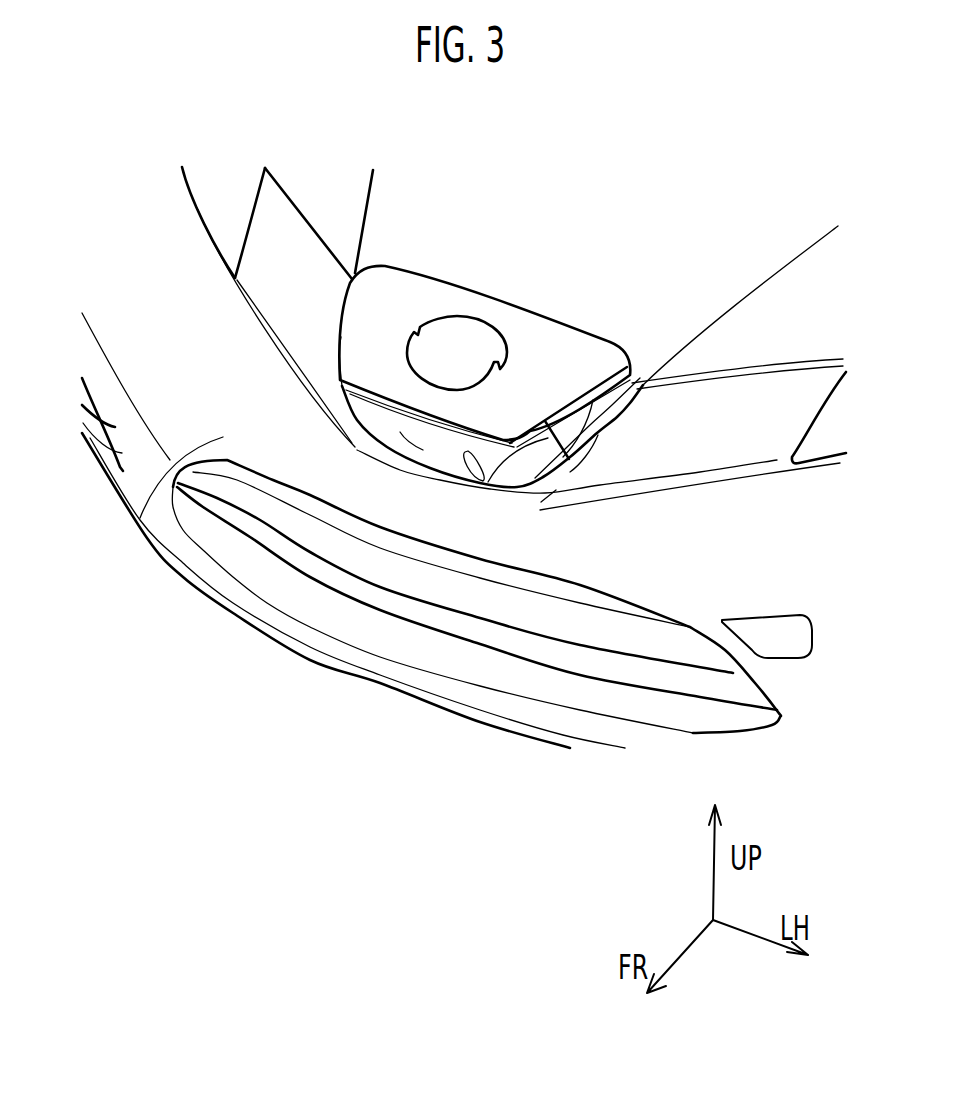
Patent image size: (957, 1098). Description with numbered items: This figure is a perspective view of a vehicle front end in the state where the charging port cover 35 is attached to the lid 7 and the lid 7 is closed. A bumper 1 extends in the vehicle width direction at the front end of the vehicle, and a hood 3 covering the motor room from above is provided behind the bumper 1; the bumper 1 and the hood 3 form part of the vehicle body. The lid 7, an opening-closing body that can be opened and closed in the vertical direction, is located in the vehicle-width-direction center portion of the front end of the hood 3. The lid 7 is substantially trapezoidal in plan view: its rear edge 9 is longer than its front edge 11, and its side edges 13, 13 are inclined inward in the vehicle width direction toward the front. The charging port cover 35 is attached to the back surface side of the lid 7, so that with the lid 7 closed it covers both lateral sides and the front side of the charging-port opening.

The bumper 1 is at (140, 518).
The hood 3 is at (414, 211).
The lid 7 is at (545, 352).
The rear edge 9 is at (468, 288).
The front edge 11 is at (423, 423).
The side edges 13 is at (341, 337).
The charging port cover 35 is at (400, 432).